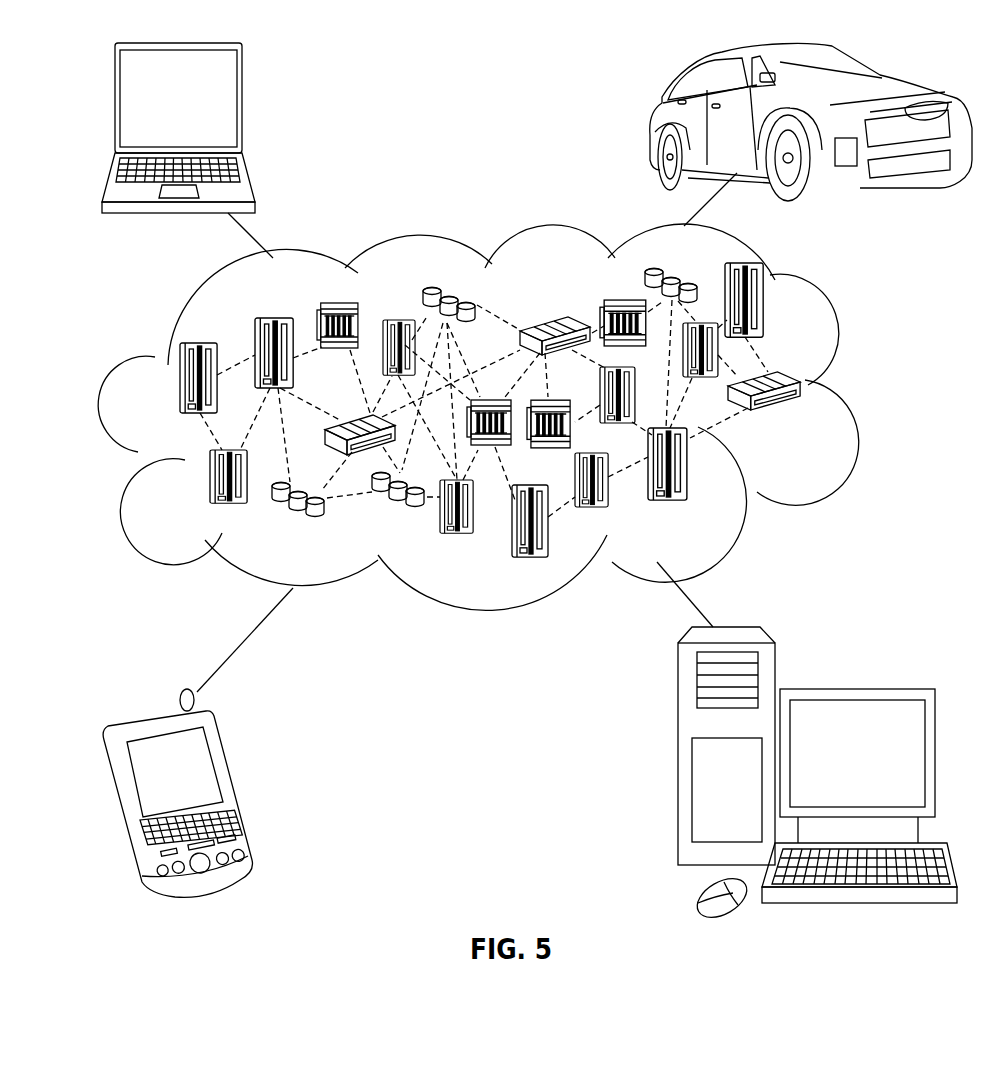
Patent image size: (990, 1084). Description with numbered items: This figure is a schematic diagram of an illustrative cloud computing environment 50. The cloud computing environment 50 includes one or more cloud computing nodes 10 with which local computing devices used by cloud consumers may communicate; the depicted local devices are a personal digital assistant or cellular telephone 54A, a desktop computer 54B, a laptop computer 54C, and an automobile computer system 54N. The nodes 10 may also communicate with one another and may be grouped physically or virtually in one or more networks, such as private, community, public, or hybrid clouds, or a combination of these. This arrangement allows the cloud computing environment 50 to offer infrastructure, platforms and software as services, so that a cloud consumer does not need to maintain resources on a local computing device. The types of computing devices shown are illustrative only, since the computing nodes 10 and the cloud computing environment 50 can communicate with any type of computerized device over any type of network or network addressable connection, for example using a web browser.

The cloud computing node 10 is at (806, 429).
The cloud computing environment 50 is at (505, 417).
The personal digital assistant or cellular telephone 54A is at (233, 785).
The desktop computer 54B is at (853, 689).
The laptop computer 54C is at (244, 104).
The automobile computer system 54N is at (650, 120).